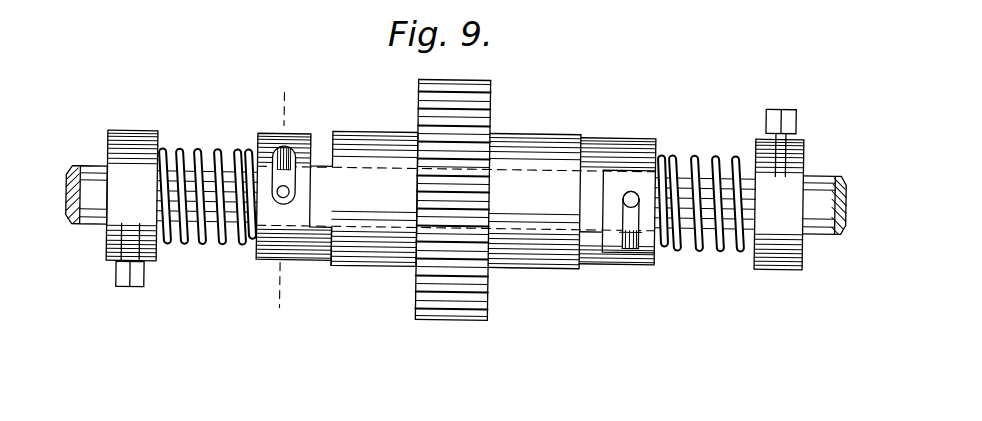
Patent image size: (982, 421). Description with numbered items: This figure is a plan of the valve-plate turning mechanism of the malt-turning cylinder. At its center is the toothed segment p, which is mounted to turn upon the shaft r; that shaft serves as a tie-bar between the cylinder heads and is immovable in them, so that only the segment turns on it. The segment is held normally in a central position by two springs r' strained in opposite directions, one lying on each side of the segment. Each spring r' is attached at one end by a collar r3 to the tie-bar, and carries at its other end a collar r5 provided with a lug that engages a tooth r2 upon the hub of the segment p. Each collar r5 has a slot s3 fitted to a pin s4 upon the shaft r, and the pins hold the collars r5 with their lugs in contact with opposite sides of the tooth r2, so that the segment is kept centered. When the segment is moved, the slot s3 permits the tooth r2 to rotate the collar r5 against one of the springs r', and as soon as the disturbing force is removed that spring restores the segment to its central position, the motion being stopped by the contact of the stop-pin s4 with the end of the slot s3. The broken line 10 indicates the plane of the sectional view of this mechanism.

The shaft (tie-bar) r is at (456, 199).
The collar r3 is at (132, 135).
The spring r' is at (452, 205).
The tooth r2 is at (317, 168).
The collar r5 is at (655, 263).
The slot s3 is at (617, 282).
The pin (stop-pin) s4 is at (289, 193).
The toothed segment p is at (448, 321).
The section line 10 is at (280, 203).